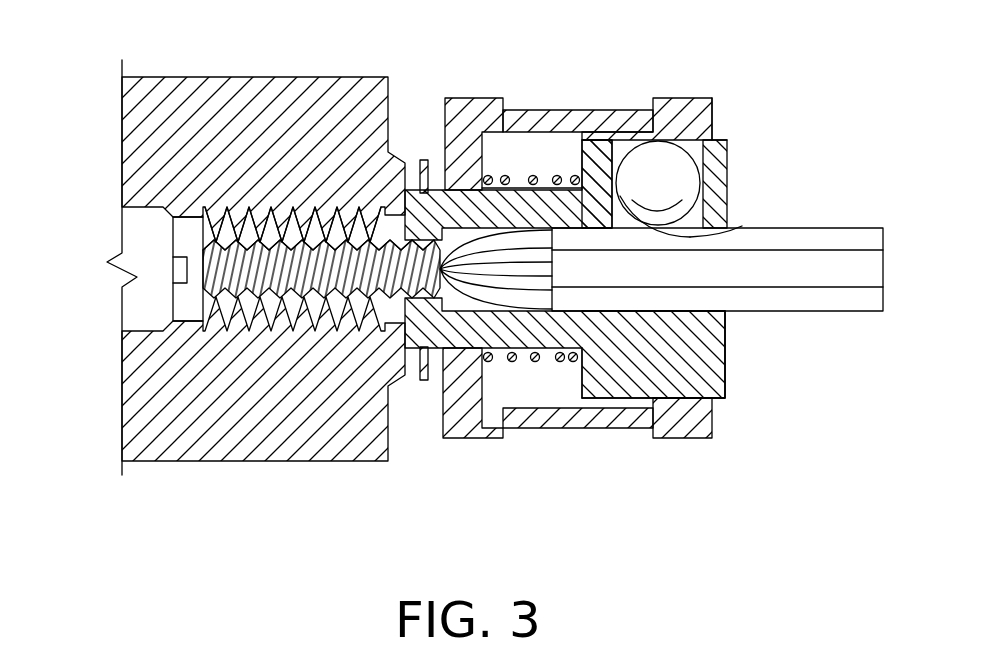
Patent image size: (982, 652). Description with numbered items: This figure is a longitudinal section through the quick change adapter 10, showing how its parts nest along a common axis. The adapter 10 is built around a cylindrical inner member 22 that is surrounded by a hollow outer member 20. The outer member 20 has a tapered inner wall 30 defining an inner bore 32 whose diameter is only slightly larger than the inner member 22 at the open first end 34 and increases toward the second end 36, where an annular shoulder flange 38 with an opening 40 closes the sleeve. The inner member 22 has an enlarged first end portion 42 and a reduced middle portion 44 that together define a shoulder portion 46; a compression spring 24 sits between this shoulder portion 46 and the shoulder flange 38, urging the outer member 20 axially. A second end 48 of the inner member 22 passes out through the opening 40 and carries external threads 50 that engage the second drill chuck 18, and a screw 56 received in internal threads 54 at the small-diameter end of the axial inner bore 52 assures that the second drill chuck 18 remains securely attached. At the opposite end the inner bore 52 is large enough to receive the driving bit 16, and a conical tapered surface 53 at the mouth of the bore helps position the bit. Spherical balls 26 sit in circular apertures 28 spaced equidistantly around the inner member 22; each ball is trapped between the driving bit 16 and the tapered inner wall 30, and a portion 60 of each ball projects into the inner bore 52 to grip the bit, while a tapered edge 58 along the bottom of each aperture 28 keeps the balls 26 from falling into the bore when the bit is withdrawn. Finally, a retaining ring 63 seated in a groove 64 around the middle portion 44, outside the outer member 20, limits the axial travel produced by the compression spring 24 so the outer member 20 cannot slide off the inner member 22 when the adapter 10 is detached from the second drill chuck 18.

The quick change adapter 10 is at (601, 424).
The driving bit 16 is at (857, 270).
The second drill chuck 18 is at (150, 385).
The outer member 20 is at (693, 113).
The inner member 22 is at (725, 160).
The compression spring 24 is at (588, 142).
The balls 26 is at (653, 160).
The apertures 28 is at (708, 143).
The tapered inner wall 30 is at (548, 165).
The inner bore 32 is at (527, 152).
The first end 34 is at (723, 398).
The second end 36 is at (488, 392).
The shoulder flange 38 is at (488, 185).
The opening 40 is at (447, 346).
The enlarged first end portion 42 is at (670, 378).
The reduced middle portion 44 is at (478, 350).
The shoulder portion 46 is at (579, 384).
The second end 48 is at (222, 210).
The external threads 50 is at (255, 325).
The axial inner bore 52 is at (466, 188).
The conical tapered surface 53 is at (717, 320).
The internal threads 54 is at (358, 212).
The screw 56 is at (177, 240).
The tapered edge 58 is at (722, 208).
The portion of the balls 60 is at (737, 224).
The retaining ring 63 is at (425, 162).
The groove 64 is at (420, 357).